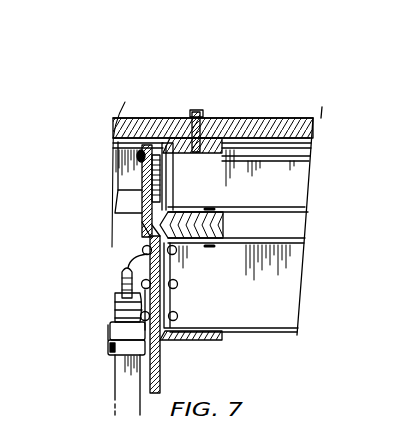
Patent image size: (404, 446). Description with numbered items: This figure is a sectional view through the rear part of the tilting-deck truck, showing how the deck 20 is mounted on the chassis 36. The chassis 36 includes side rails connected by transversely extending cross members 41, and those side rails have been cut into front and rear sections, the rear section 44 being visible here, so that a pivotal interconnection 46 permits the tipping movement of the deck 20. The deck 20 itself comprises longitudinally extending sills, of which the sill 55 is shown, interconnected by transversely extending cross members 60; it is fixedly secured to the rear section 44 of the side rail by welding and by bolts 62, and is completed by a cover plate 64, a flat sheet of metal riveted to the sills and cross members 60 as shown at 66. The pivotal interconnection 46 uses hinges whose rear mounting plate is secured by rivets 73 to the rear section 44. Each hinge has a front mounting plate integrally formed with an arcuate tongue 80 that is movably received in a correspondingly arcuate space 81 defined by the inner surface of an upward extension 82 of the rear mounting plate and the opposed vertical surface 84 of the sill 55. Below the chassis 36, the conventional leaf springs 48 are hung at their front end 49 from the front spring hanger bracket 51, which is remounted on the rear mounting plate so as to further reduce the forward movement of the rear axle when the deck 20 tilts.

The deck 20 is at (276, 116).
The chassis 36 is at (273, 277).
The cross members 41 is at (282, 304).
The rear section 44 is at (197, 340).
The pivotal interconnection 46 is at (99, 329).
The leaf springs 48 is at (120, 376).
The front end of leaf spring 49 is at (114, 307).
The front spring hanger bracket 51 is at (121, 280).
The sill 55 is at (174, 186).
The cross members 60 is at (297, 186).
The bolts 62 is at (207, 202).
The cover plate 64 is at (158, 120).
The rivets 66 is at (199, 112).
The rivets 73 is at (177, 283).
The arcuate tongue 80 is at (140, 170).
The arcuate space 81 is at (142, 212).
The upward extension 82 is at (121, 203).
The vertical surface 84 is at (148, 230).